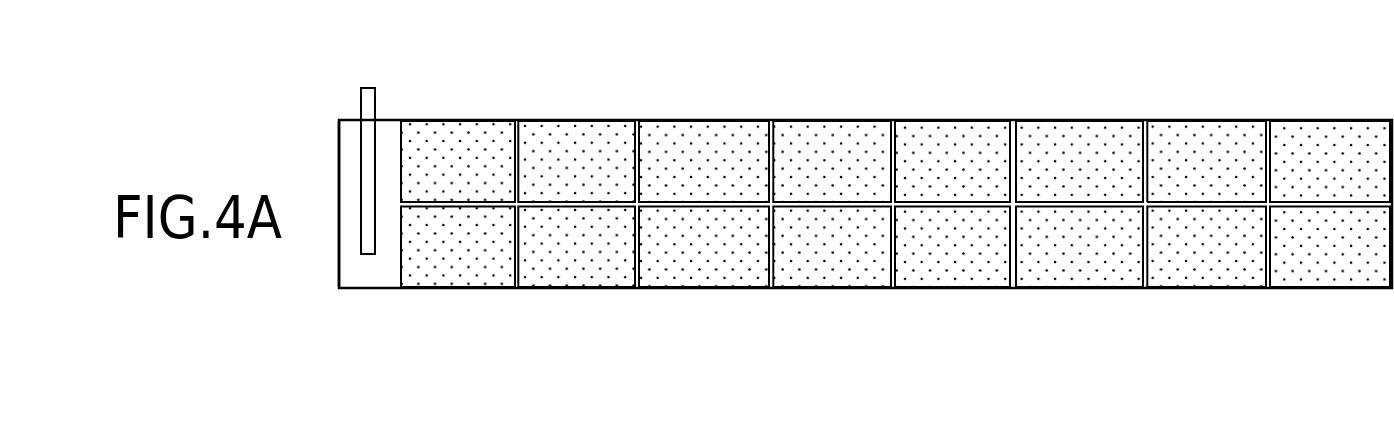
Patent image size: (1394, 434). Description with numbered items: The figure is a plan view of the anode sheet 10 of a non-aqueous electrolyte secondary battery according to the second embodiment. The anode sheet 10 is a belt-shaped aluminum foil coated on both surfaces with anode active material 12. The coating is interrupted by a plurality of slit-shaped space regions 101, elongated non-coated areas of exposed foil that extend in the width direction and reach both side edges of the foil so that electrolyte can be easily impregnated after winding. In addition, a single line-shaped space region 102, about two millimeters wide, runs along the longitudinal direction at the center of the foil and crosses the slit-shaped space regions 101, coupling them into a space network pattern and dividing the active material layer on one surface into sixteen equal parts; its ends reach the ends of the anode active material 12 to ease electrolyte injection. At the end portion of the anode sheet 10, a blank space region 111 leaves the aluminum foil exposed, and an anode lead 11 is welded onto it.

The anode sheet 10 is at (865, 166).
The anode lead 11 is at (372, 103).
The anode active material 12 is at (947, 135).
The slit-shaped space region 101 is at (1147, 152).
The line-shaped space region 102 is at (1213, 204).
The blank space region 111 is at (382, 278).